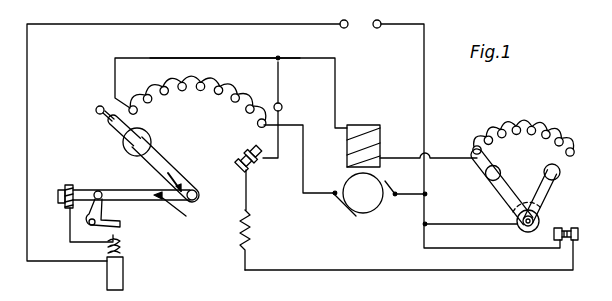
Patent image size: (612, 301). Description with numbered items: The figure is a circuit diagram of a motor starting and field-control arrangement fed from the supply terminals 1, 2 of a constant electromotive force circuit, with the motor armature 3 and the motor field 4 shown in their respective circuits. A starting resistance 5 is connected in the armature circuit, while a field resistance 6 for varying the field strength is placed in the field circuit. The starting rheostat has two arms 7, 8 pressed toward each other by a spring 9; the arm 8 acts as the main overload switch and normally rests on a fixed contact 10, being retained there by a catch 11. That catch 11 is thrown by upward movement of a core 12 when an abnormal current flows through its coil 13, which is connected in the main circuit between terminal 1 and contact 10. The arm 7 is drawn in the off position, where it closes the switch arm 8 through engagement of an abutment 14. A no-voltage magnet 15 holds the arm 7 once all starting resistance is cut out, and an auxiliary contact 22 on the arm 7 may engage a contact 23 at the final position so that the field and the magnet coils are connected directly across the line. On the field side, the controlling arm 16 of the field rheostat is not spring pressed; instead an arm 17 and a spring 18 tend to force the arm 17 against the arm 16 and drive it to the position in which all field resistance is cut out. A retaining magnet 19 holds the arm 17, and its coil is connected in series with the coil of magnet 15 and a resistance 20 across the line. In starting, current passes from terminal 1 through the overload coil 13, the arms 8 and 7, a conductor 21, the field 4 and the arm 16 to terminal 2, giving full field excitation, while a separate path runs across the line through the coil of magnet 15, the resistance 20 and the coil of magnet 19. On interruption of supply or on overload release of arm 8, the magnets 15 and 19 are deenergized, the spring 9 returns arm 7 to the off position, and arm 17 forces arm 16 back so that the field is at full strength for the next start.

The supply terminal 1 is at (343, 14).
The supply terminal 2 is at (377, 14).
The motor armature 3 is at (379, 194).
The motor field 4 is at (412, 134).
The starting resistance 5 is at (197, 101).
The field resistance 6 is at (523, 129).
The starting arm 7 is at (163, 158).
The main overload switch arm 8 is at (113, 190).
The spring 9 is at (171, 212).
The fixed contact 10 is at (63, 188).
The catch 11 is at (103, 204).
The core 12 is at (124, 272).
The overload coil 13 is at (120, 249).
The abutment 14 is at (162, 182).
The no-voltage magnet 15 is at (254, 176).
The field rheostat arm 16 is at (503, 196).
The arm 17 is at (553, 184).
The spring 18 is at (538, 225).
The retaining magnet 19 is at (578, 241).
The resistance 20 is at (258, 240).
The conductor 21 is at (213, 57).
The auxiliary contact 22 is at (96, 113).
The contact 23 is at (282, 106).